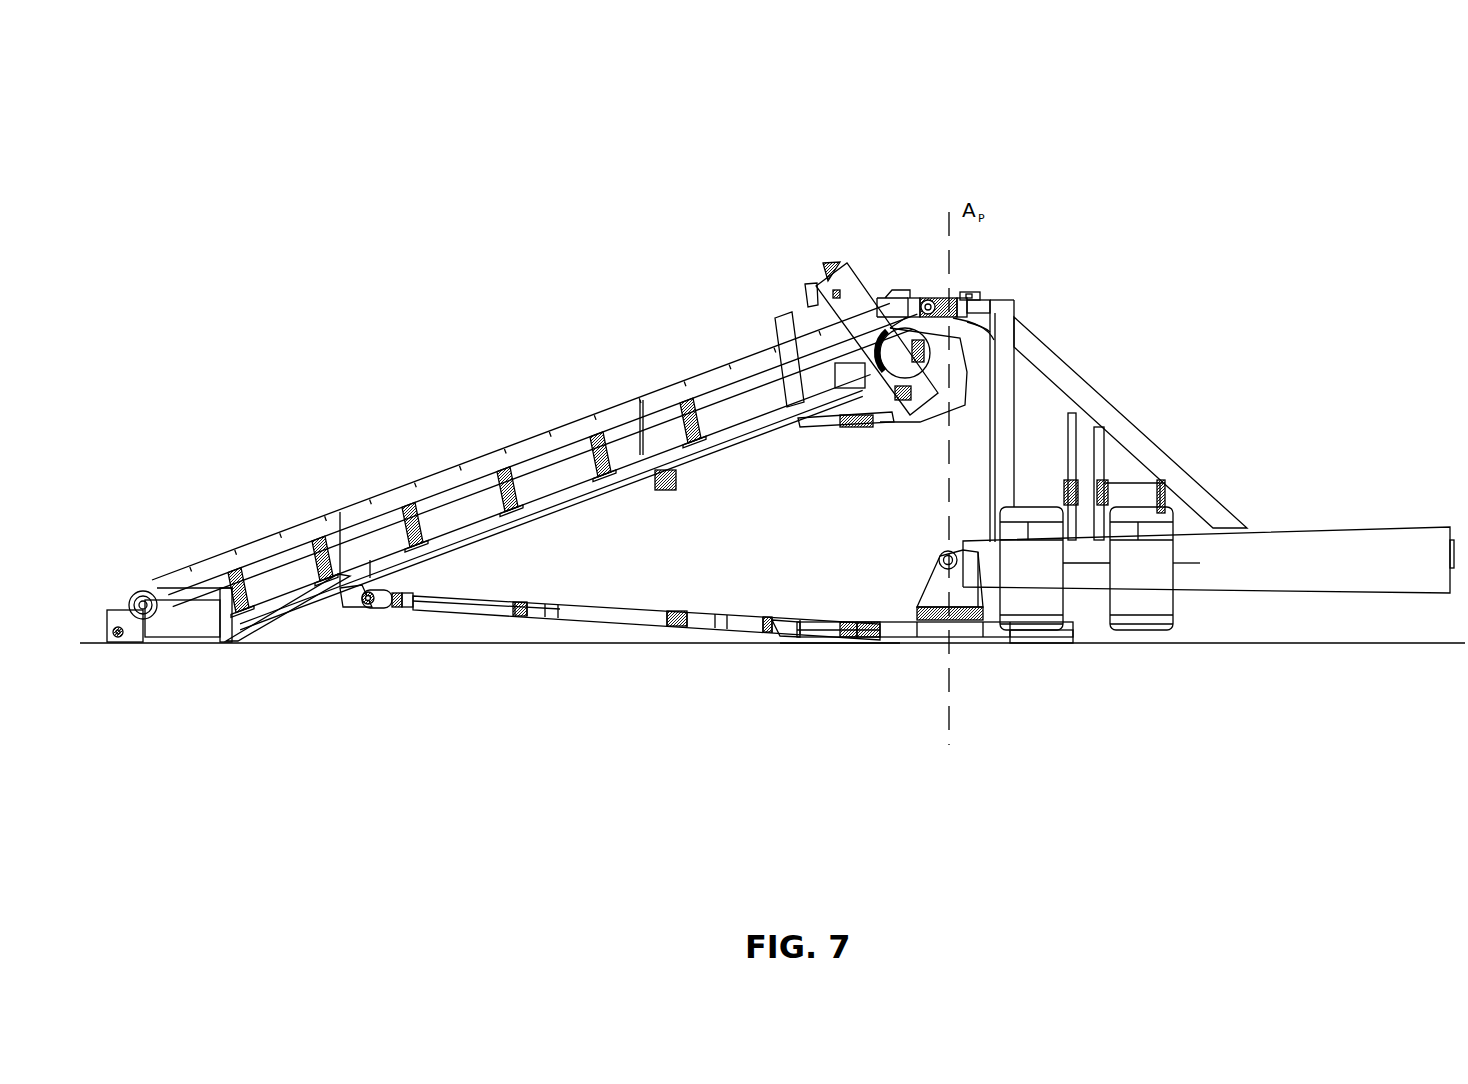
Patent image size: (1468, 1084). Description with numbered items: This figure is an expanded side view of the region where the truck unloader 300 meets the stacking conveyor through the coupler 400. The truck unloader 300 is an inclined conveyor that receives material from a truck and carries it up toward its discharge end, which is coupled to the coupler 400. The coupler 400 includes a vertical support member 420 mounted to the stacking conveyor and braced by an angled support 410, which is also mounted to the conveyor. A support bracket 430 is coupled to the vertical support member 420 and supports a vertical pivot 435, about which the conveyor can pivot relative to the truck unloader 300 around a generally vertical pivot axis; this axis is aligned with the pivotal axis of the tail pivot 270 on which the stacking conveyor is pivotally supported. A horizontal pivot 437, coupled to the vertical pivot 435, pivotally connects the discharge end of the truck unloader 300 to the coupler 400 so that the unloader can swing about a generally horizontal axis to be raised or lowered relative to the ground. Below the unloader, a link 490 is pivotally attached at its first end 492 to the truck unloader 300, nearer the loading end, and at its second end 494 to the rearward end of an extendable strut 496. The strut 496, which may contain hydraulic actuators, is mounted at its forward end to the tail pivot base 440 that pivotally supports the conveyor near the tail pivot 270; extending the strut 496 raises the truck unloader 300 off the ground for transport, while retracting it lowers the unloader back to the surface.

The truck unloader 300 is at (200, 192).
The coupler 400 is at (1183, 475).
The angled support 410 is at (1090, 382).
The vertical support member 420 is at (1005, 300).
The support bracket 430 is at (979, 292).
The vertical pivot 435 is at (1015, 326).
The horizontal pivot 437 is at (927, 292).
The tail pivot base 440 is at (923, 608).
The tail pivot 270 is at (937, 575).
The link 490 is at (535, 612).
The first end 492 is at (373, 607).
The second end 494 is at (775, 627).
The extendable strut 496 is at (807, 652).